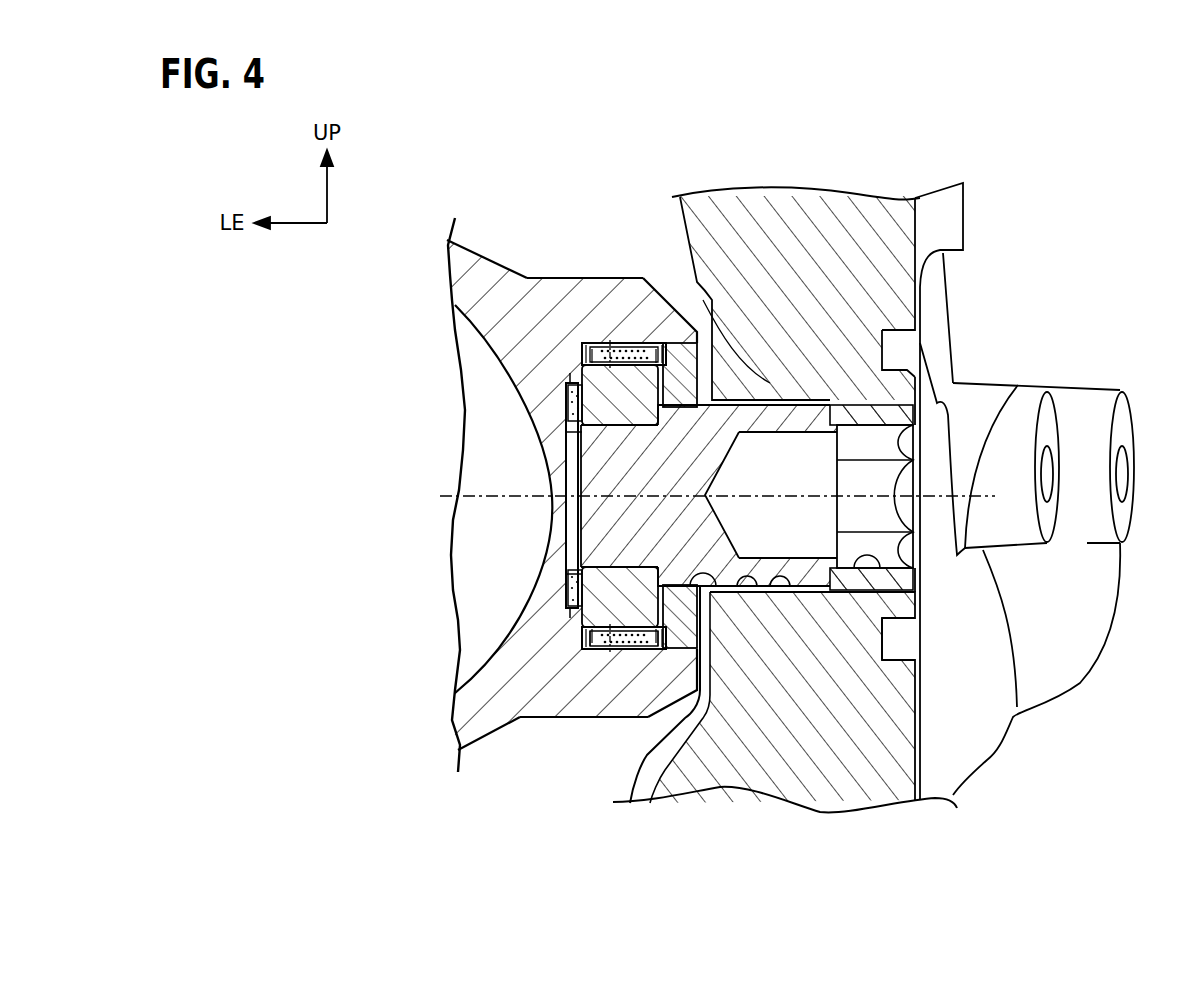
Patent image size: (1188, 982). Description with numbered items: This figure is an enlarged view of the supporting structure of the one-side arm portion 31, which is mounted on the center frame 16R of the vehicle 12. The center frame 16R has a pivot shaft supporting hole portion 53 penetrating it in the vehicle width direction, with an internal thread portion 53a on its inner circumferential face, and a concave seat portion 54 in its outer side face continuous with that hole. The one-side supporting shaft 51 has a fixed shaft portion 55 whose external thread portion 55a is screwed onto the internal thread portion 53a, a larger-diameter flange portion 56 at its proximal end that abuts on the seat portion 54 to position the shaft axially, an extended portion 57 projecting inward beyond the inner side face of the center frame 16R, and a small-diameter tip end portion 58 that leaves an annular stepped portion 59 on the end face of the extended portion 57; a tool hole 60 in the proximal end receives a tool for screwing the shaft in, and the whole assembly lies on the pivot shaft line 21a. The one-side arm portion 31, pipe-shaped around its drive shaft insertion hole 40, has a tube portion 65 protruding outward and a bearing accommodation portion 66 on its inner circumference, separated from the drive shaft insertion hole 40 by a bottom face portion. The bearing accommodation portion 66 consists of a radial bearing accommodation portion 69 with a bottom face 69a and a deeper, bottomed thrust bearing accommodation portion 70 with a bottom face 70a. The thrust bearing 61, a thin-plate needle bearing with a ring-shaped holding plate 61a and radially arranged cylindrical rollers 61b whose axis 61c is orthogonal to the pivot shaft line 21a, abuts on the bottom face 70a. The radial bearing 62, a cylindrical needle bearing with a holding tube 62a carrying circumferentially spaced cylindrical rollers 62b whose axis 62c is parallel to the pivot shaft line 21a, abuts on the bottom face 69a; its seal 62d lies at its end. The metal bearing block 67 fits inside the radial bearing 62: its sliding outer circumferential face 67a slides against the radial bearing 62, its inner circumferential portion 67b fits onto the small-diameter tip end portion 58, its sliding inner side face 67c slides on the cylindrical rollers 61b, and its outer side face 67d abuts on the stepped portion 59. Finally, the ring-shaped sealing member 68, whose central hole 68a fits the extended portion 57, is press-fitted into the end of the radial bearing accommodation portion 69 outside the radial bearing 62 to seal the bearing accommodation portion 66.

The housing 12 is at (447, 243).
The one-side arm portion 31 is at (480, 252).
The drive shaft insertion hole 40 is at (473, 375).
The tube portion 65 is at (645, 277).
The bearing block 67 is at (520, 362).
The sliding outer circumferential face 67a is at (607, 330).
The inner circumferential portion 67b is at (560, 452).
The sliding inner side face 67c is at (540, 400).
The outer side face 67d is at (738, 398).
The thrust bearing 61 is at (567, 606).
The ring-shaped holding plate 61a is at (563, 588).
The cylindrical rollers 61b is at (566, 418).
The axis 61c is at (575, 432).
The one-side supporting shaft 51 is at (560, 486).
The thrust bearing accommodation portion 70 is at (550, 504).
The bottom face 70a is at (560, 533).
The pivot shaft supporting hole portion 53 is at (740, 580).
The internal thread portion 53a is at (782, 575).
The fixed shaft portion 55 is at (808, 592).
The external thread portion 55a is at (830, 592).
The radial bearing 62 is at (614, 343).
The holding tube 62a is at (598, 343).
The cylindrical rollers 62b is at (643, 343).
The axis 62c is at (610, 330).
The bearing seal 62d is at (705, 330).
The radial bearing accommodation portion 69 is at (606, 343).
The bottom face 69a is at (580, 627).
The small-diameter tip end portion 58 is at (603, 653).
The stepped portion 59 is at (628, 650).
The bearing accommodation portion 66 is at (672, 370).
The center frame 16R is at (835, 210).
The seat portion 54 is at (893, 620).
The flange portion 56 is at (906, 660).
The sealing member 68 is at (712, 375).
The hole 68a is at (705, 600).
The extended portion 57 is at (670, 650).
The tool hole 60 is at (853, 620).
The pivot shaft line 21a is at (1018, 385).